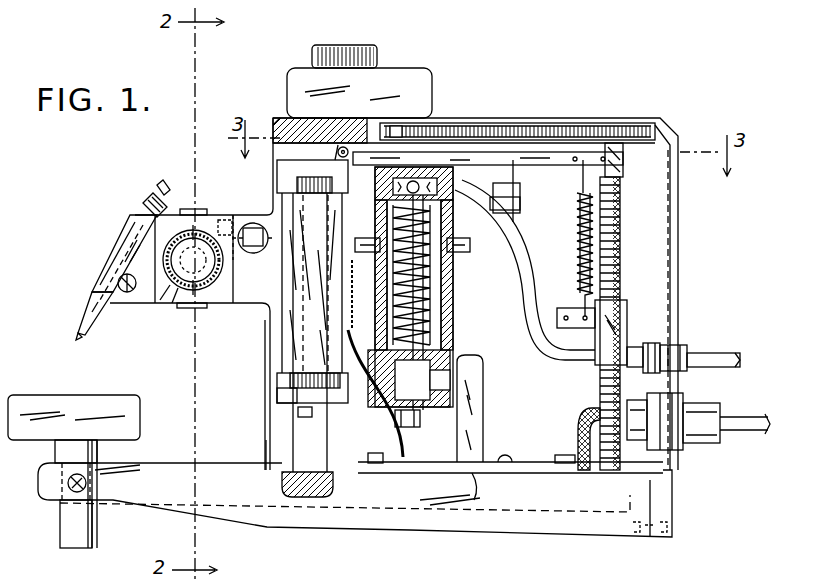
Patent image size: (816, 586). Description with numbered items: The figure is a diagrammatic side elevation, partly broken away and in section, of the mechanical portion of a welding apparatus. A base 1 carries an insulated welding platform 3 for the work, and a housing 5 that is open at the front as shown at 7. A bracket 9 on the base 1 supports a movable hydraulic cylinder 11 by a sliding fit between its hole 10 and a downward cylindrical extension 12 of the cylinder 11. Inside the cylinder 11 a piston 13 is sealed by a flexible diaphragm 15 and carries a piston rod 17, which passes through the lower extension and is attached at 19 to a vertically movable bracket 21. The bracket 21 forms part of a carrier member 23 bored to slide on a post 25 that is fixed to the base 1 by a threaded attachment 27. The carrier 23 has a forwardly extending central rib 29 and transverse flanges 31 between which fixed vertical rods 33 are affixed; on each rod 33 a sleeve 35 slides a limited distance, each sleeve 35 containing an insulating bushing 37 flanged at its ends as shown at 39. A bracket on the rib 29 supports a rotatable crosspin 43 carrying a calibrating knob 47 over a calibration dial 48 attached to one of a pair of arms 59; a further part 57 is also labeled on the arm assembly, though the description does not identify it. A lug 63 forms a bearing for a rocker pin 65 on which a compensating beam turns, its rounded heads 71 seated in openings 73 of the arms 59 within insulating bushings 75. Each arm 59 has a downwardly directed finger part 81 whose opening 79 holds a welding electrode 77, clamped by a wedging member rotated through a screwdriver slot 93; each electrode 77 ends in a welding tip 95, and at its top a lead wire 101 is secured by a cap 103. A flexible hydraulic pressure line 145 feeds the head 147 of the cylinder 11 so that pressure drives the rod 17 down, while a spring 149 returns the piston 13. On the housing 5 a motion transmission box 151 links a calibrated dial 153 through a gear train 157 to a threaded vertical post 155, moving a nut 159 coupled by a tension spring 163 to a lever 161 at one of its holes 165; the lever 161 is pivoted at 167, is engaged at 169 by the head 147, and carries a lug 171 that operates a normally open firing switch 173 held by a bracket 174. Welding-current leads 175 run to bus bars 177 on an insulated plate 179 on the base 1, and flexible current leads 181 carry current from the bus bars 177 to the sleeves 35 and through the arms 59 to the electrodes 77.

The base 1 is at (508, 522).
The worktable or insulated welding platform 3 is at (76, 400).
The housing 5 is at (678, 230).
The open front of housing 7 is at (268, 412).
The bracket 9 is at (483, 430).
The hole 10 is at (452, 362).
The hydraulic cylinder 11 is at (453, 295).
The downward cylindrical extension 12 is at (470, 386).
The piston 13 is at (450, 252).
The flexible diaphragm 15 is at (378, 214).
The piston rod 17 is at (425, 323).
The attachment 19 is at (421, 412).
The vertically movable bracket 21 is at (378, 408).
The carrier member 23 is at (335, 404).
The post 25 is at (296, 153).
The threaded attachment 27 is at (285, 482).
The central rib 29 is at (282, 373).
The transverse flanges 31 is at (272, 181).
The fixed vertical rods 33 is at (322, 118).
The sleeve 35 is at (273, 200).
The electrically insulating bushing 37 is at (268, 356).
The flange of bushing 39 is at (330, 194).
The rotatable crosspin 43 is at (182, 240).
The calibrating knob 47 is at (168, 290).
The calibration dial 48 is at (176, 302).
The tab 57 is at (190, 208).
The arms 59 is at (233, 284).
The lug 63 is at (226, 219).
The rocker pin 65 is at (236, 214).
The rounded head 71 is at (250, 223).
The opening 73 is at (253, 253).
The insulating bushings 75 is at (266, 250).
The welding rods or electrodes 77 is at (90, 298).
The opening 79 is at (102, 255).
The finger part 81 is at (122, 242).
The screwdriver slot 93 is at (127, 292).
The welding tip 95 is at (76, 333).
The lead wire 101 is at (160, 183).
The cap 103 is at (147, 197).
The flexible hydraulic pressure line 145 is at (722, 355).
The head 147 is at (445, 185).
The spring 149 is at (437, 281).
The motion transmission box 151 is at (432, 88).
The calibrated dial 153 is at (378, 54).
The threaded vertical post 155 is at (622, 212).
The gear train 157 is at (452, 126).
The nut 159 is at (628, 325).
The lever 161 is at (545, 152).
The tension spring 163 is at (577, 257).
The holes 165 is at (624, 168).
The pivot 167 is at (343, 147).
The engagement point 169 is at (395, 126).
The lug 171 is at (516, 170).
The firing switch 173 is at (504, 213).
The bracket 174 is at (521, 186).
The welding-current leads 175 is at (748, 433).
The bus bars 177 is at (432, 464).
The insulated plate 179 is at (476, 480).
The flexible current leads 181 is at (388, 465).